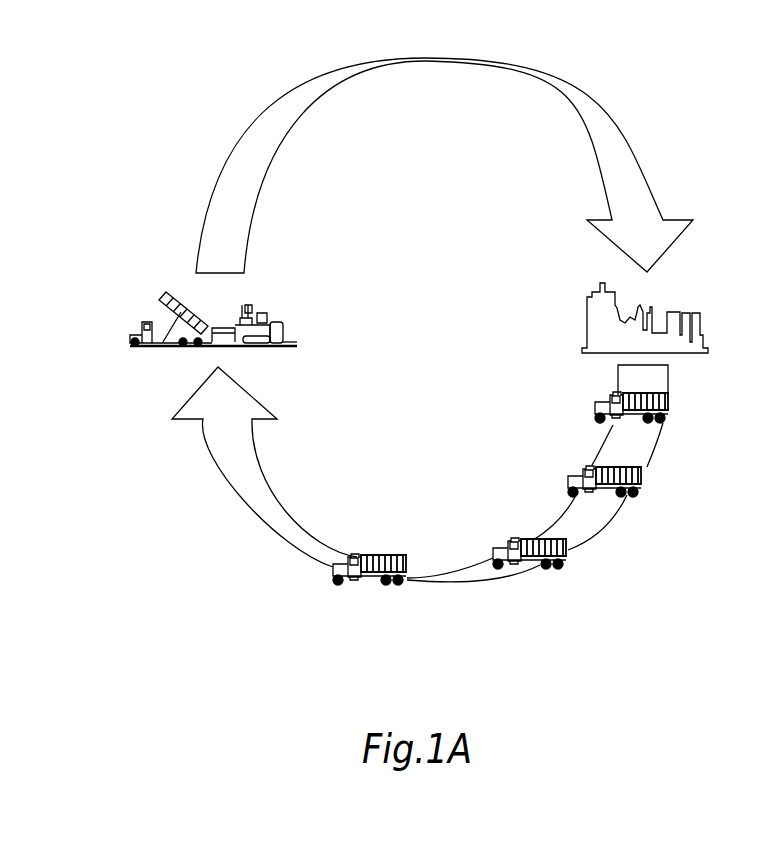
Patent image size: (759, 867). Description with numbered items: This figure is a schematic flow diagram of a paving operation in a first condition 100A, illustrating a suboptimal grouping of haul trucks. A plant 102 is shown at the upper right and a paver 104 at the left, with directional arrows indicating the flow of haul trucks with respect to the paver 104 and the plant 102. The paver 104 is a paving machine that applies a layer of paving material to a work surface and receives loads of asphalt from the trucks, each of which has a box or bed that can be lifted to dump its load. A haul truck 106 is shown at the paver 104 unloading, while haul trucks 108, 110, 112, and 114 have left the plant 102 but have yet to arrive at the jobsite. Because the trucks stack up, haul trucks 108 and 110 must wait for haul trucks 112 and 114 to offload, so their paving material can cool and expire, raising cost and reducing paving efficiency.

The first condition 100A is at (180, 48).
The plant 102 is at (590, 313).
The paver 104 is at (267, 320).
The haul truck 106 is at (132, 325).
The haul truck 108 is at (663, 423).
The haul truck 110 is at (633, 497).
The haul truck 112 is at (558, 566).
The haul truck 114 is at (338, 583).